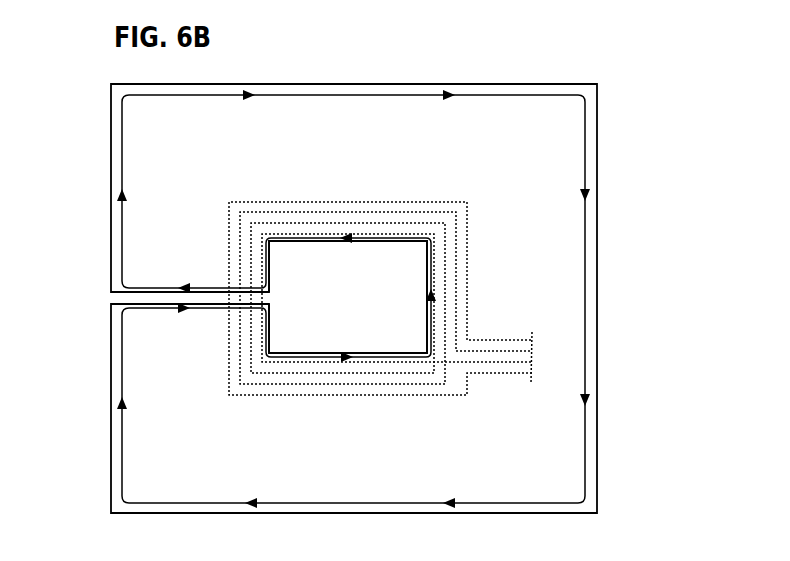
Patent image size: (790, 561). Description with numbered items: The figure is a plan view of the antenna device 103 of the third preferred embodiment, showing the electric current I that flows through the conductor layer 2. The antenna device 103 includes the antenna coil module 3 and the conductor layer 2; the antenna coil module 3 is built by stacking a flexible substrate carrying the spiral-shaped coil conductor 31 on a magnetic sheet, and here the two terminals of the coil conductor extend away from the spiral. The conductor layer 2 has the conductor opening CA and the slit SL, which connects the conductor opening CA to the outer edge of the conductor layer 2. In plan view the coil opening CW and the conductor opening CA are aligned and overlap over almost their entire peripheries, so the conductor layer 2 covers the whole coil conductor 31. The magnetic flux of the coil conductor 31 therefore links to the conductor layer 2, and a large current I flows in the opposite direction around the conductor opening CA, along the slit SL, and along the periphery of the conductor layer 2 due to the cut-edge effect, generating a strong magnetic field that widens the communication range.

The antenna device 103 is at (665, 65).
The conductor layer 2 is at (468, 102).
The slit SL is at (104, 297).
The conductor opening CA is at (440, 265).
The coil opening CW is at (309, 272).
The electric current I is at (587, 270).
The antenna coil module 3 is at (469, 203).
The coil conductor 31 is at (353, 235).